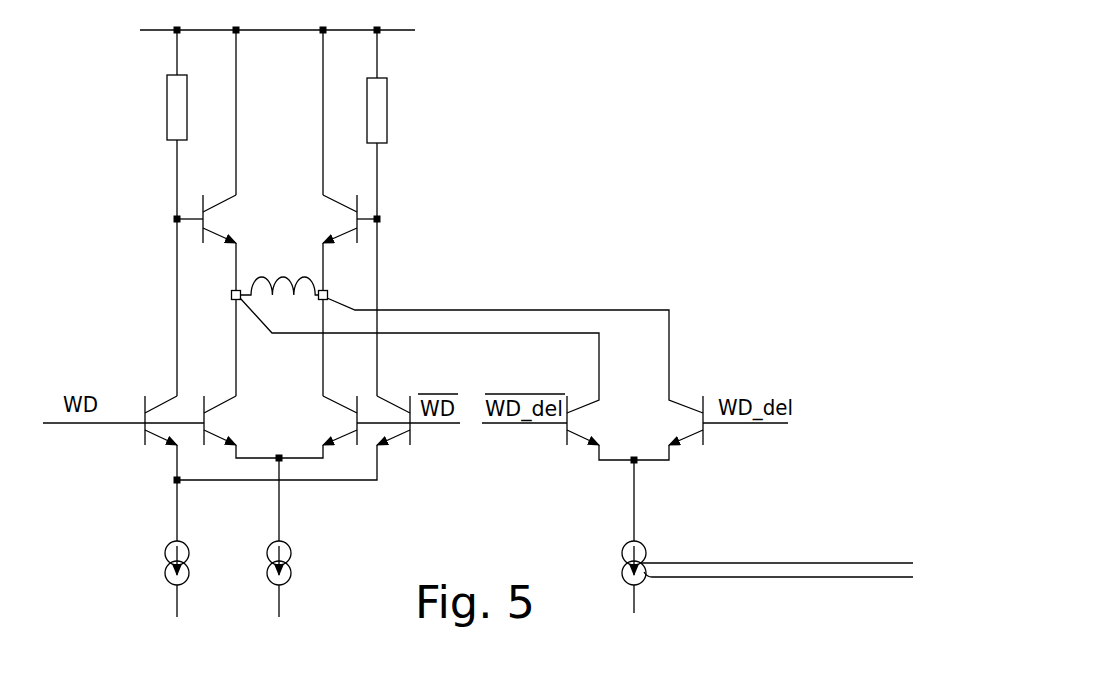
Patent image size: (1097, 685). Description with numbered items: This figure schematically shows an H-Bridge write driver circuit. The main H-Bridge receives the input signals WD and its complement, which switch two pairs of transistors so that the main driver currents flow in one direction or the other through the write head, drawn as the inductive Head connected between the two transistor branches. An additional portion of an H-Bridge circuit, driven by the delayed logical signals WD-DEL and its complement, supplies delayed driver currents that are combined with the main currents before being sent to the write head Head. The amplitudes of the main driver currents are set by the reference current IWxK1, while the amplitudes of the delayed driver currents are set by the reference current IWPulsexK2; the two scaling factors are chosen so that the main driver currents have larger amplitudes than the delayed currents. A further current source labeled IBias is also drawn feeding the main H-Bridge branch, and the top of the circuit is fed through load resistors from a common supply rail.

The write head Head is at (280, 272).
The bias current source IBias is at (147, 531).
The reference current IW×K1 IWxK1 is at (330, 537).
The reference current IW-Pulse×K2 IWPulsexK2 is at (767, 536).